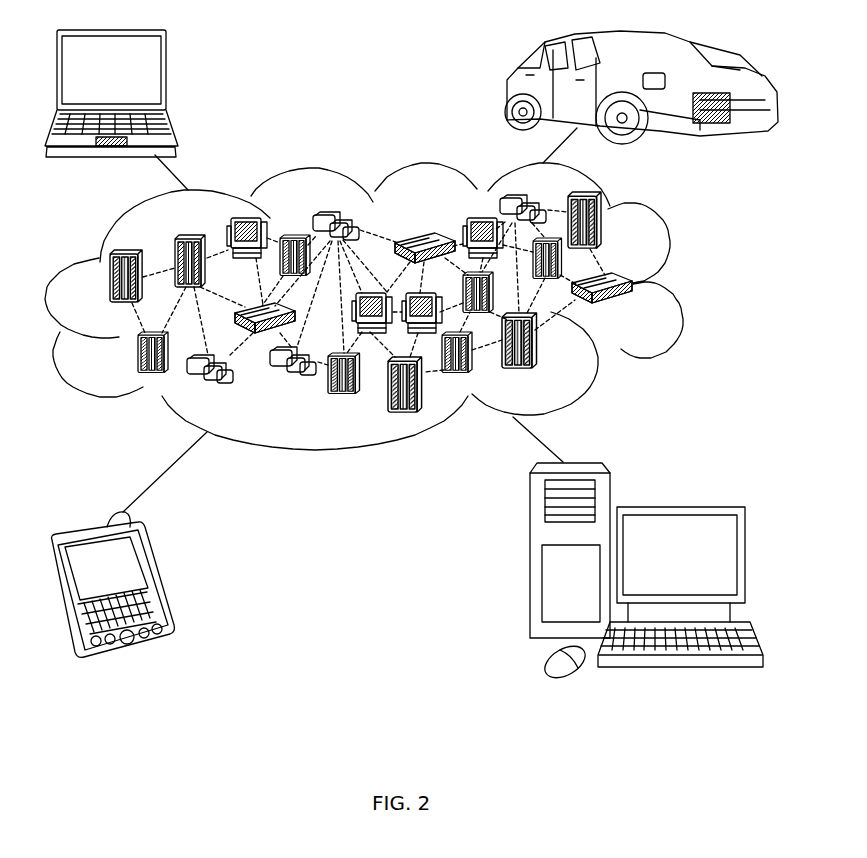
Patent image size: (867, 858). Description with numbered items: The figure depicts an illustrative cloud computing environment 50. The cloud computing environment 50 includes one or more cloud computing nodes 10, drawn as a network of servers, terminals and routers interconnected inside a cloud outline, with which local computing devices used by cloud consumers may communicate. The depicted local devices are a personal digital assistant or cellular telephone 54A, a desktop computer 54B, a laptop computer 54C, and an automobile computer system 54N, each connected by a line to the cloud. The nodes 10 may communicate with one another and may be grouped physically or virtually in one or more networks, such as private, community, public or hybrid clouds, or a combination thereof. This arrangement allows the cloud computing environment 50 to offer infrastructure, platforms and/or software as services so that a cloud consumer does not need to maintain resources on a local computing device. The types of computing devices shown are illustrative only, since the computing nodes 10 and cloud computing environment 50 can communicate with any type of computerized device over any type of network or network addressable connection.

The cloud computing nodes 10 is at (632, 309).
The cloud computing environment 50 is at (683, 284).
The personal digital assistant (PDA) or cellular telephone 54A is at (165, 580).
The desktop computer 54B is at (678, 506).
The laptop computer 54C is at (170, 76).
The automobile computer system 54N is at (505, 90).